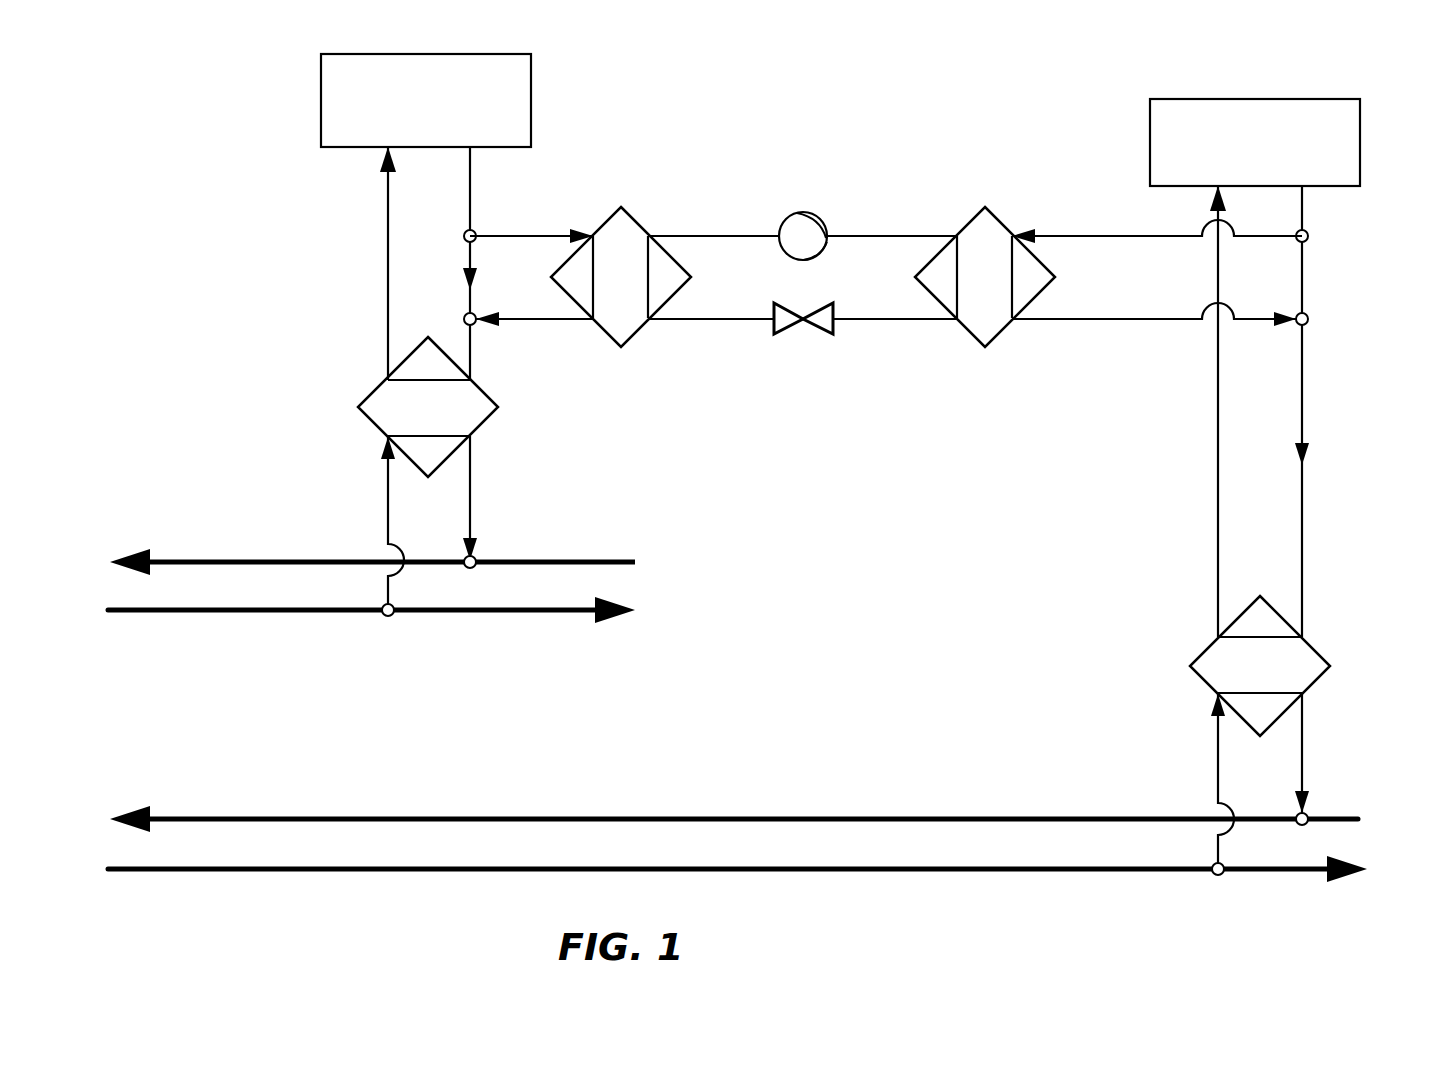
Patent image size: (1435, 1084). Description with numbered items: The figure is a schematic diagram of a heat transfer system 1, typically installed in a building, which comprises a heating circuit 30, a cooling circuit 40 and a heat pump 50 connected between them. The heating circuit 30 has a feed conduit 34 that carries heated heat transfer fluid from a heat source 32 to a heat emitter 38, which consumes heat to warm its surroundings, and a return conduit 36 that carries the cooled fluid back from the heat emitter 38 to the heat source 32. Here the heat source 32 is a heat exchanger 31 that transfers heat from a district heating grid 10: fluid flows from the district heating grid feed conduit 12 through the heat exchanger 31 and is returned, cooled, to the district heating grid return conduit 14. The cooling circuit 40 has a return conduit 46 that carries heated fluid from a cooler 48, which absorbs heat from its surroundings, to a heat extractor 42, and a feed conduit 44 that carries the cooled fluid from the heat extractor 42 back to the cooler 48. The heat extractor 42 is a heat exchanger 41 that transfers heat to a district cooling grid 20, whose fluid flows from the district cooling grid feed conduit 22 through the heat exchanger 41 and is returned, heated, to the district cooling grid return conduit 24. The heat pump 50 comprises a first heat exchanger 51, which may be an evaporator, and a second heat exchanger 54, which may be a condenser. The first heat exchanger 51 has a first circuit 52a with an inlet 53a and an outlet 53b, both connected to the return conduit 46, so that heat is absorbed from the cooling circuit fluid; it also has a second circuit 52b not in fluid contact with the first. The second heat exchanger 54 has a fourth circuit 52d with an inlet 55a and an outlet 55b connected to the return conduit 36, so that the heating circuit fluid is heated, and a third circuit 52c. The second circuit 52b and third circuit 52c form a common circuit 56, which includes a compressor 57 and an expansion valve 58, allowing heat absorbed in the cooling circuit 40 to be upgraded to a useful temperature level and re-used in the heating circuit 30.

The heat transfer system 1 is at (222, 138).
The district heating grid 10 is at (650, 808).
The district heating grid feed conduit 12 is at (793, 872).
The district heating grid return conduit 14 is at (822, 817).
The district cooling grid 20 is at (248, 537).
The district cooling grid feed conduit 22 is at (297, 612).
The district cooling grid return conduit 24 is at (327, 556).
The heating circuit 30 is at (1350, 212).
The heat exchanger 31 is at (1302, 650).
The heat source 32 is at (1215, 665).
The feed conduit 34 is at (1215, 540).
The return conduit 36 is at (1302, 400).
The heat emitter 38 is at (1325, 108).
The cooling circuit 40 is at (328, 188).
The heat exchanger 41 is at (474, 405).
The heat extractor 42 is at (385, 400).
The feed conduit 44 is at (386, 290).
The return conduit 46 is at (470, 200).
The cooler 48 is at (330, 120).
The heat pump 50 is at (757, 165).
The first heat exchanger 51 is at (630, 243).
The first circuit 52a is at (562, 230).
The second circuit 52b is at (718, 325).
The third circuit 52c is at (905, 325).
The fourth circuit 52d is at (1053, 232).
The inlet 53a is at (547, 233).
The outlet 53b is at (563, 325).
The second heat exchanger 54 is at (995, 232).
The inlet 55a is at (1115, 233).
The outlet 55b is at (1100, 325).
The common circuit 56 is at (885, 232).
The compressor 57 is at (815, 212).
The expansion valve 58 is at (820, 335).